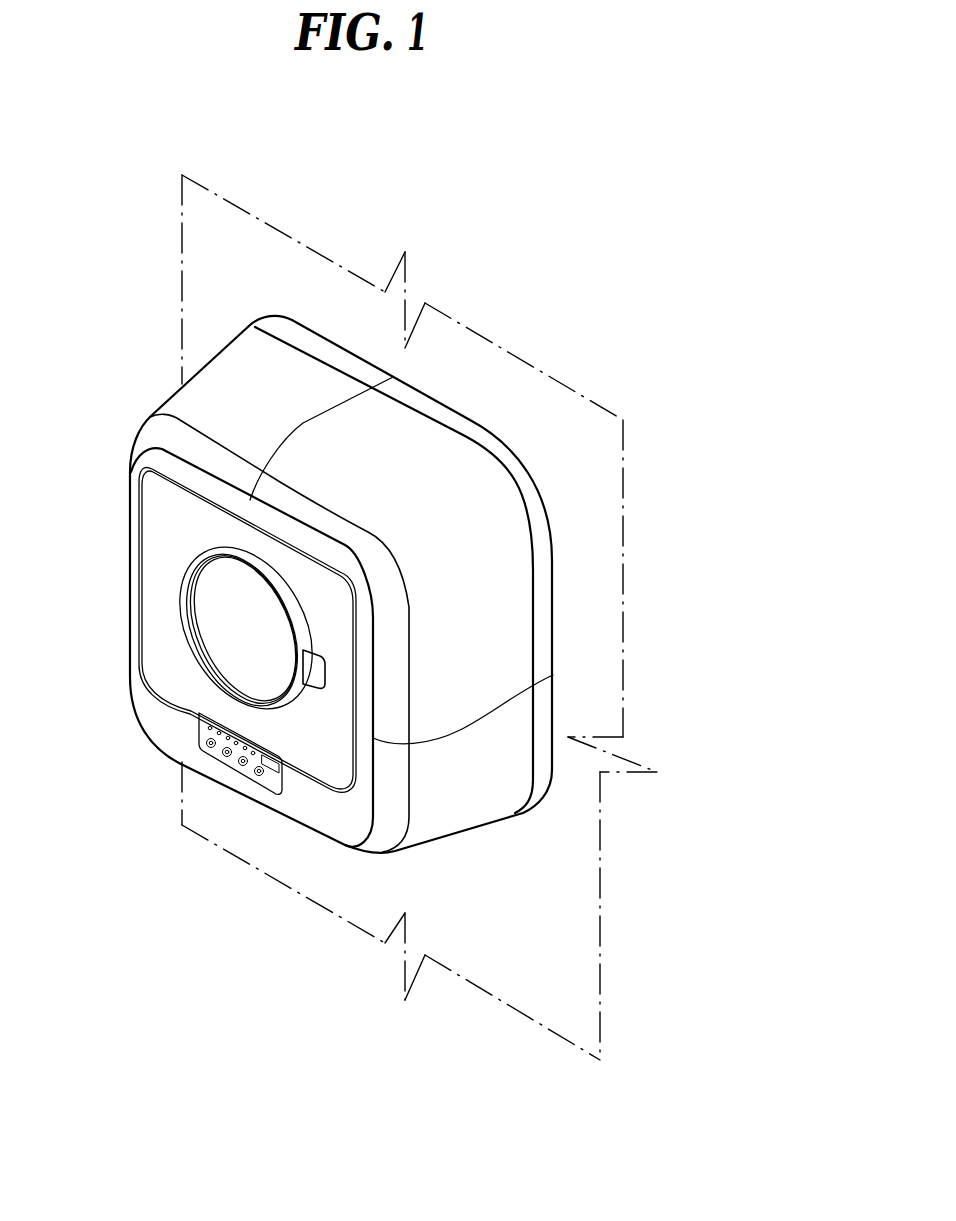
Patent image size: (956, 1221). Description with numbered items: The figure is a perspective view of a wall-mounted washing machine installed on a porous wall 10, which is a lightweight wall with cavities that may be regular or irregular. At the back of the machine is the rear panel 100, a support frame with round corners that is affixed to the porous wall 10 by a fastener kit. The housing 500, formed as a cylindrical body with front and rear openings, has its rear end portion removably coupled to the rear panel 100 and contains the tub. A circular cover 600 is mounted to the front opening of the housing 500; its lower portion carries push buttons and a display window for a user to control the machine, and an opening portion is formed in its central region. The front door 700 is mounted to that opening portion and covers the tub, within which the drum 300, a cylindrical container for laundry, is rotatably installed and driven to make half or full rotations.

The porous wall 10 is at (514, 378).
The rear panel 100 is at (533, 520).
The housing 500 is at (507, 582).
The front door 700 is at (160, 622).
The drum 300 is at (257, 683).
The cover 600 is at (167, 713).